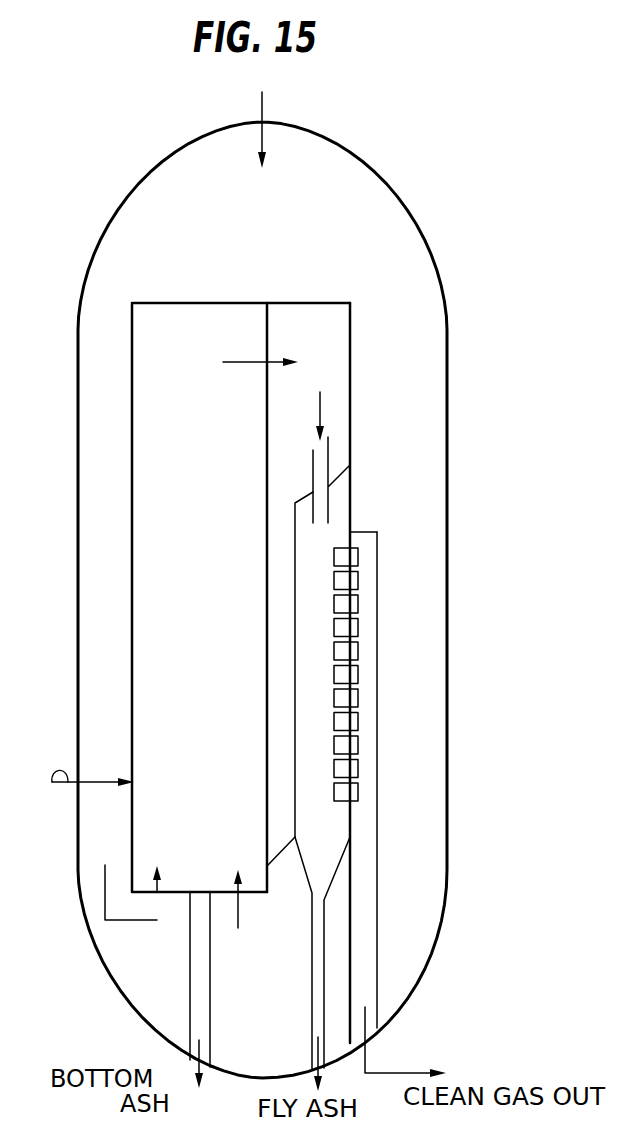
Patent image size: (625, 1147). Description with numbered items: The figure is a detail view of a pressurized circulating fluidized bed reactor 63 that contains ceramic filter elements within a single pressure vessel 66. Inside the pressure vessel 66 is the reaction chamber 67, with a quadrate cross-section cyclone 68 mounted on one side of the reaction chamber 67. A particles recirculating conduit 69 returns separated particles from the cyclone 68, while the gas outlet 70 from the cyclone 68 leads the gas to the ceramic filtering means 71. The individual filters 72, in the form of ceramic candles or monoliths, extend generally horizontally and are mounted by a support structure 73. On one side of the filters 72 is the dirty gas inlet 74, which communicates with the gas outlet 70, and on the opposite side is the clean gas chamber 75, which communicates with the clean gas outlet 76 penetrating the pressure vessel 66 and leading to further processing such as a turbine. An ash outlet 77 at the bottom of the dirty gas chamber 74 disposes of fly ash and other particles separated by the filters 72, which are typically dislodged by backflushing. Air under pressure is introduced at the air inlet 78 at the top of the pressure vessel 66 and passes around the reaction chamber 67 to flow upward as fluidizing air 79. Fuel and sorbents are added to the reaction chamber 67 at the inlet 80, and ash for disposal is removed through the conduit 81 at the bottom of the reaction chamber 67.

The combustion and gas cleanup unit 63 is at (459, 152).
The pressure vessel 66 is at (448, 836).
The reaction chamber 67 is at (133, 608).
The cyclone 68 is at (337, 363).
The particles recirculating conduit 69 is at (283, 830).
The gas outlet 70 is at (328, 492).
The ceramic filtering means 71 is at (368, 547).
The filter elements 72 is at (346, 654).
The support structure 73 is at (347, 832).
The dirty gas inlet 74 is at (307, 620).
The clean gas chamber 75 is at (371, 611).
The clean gas outlet 76 is at (373, 1036).
The ash outlet 77 is at (313, 951).
The air inlet 78 is at (262, 108).
The fluidizing air flow 79 is at (157, 920).
The fuel and sorbent inlet 80 is at (79, 790).
The ash conduit 81 is at (193, 1012).